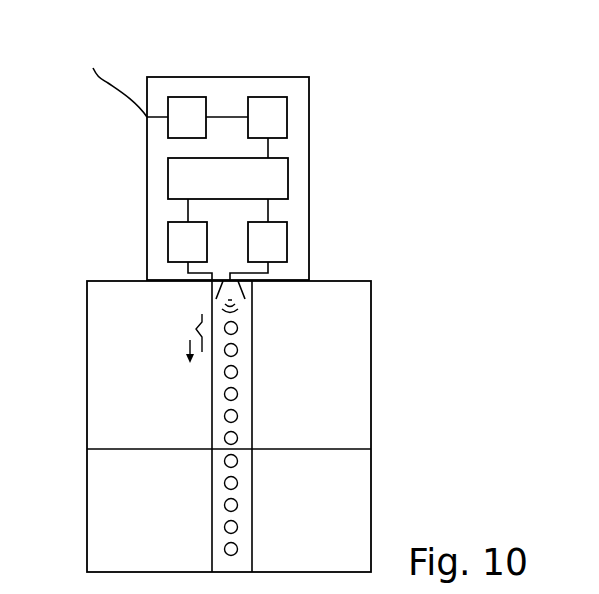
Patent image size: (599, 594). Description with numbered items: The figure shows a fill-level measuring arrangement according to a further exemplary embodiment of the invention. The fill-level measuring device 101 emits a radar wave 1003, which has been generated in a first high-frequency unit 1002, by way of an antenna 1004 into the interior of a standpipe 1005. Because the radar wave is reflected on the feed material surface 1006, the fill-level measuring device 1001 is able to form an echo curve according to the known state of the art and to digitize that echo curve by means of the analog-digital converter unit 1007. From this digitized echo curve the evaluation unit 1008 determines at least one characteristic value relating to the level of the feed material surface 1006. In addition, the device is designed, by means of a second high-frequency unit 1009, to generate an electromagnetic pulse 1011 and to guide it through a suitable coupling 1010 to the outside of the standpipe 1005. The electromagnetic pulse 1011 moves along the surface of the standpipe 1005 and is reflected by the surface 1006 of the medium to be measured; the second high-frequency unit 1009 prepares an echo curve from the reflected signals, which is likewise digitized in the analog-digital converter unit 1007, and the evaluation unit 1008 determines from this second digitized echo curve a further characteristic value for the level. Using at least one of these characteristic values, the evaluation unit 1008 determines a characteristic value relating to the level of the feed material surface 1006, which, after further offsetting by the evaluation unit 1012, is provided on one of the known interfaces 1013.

The fill-level measuring device 101 is at (447, 100).
The fill-level measuring device 1001 is at (308, 194).
The first high-frequency unit 1002 is at (288, 241).
The radar wave 1003 is at (238, 312).
The antenna 1004 is at (243, 290).
The standpipe 1005 is at (252, 374).
The feed material surface 1006 is at (290, 452).
The analog-digital converter unit 1007 is at (288, 177).
The evaluation unit 1008 is at (288, 122).
The second high-frequency unit 1009 is at (168, 243).
The coupling 1010 is at (212, 287).
The electromagnetic pulse 1011 is at (190, 330).
The evaluation unit 1012 is at (198, 97).
The interfaces 1013 is at (105, 80).